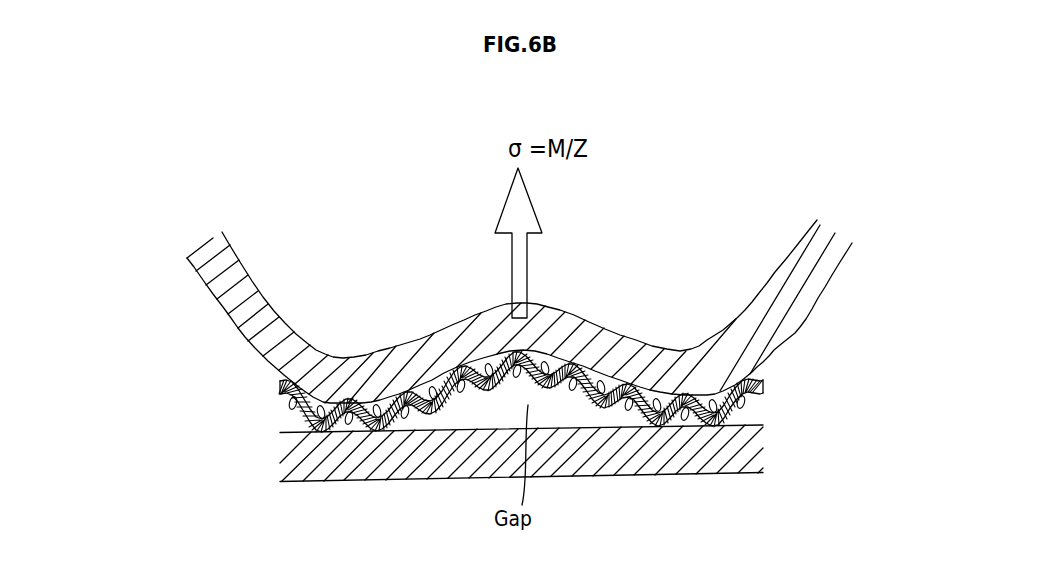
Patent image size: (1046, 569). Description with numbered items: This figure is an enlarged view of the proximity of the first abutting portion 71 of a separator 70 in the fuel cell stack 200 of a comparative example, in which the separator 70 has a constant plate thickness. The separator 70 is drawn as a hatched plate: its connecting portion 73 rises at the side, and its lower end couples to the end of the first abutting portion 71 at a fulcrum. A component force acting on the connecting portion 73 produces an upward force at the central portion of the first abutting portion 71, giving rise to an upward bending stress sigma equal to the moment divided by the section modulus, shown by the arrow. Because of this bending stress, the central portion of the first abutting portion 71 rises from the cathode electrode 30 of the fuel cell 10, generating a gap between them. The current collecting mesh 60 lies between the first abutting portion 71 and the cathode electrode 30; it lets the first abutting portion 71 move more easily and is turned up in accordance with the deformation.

The fuel cell stack 200 is at (768, 182).
The separator 70 is at (172, 288).
The first abutting portion 71 is at (577, 330).
The connecting portion 73 is at (810, 292).
The current collecting mesh 60 is at (766, 411).
The cathode electrode 30 is at (760, 445).
The fuel cell 10 is at (750, 484).